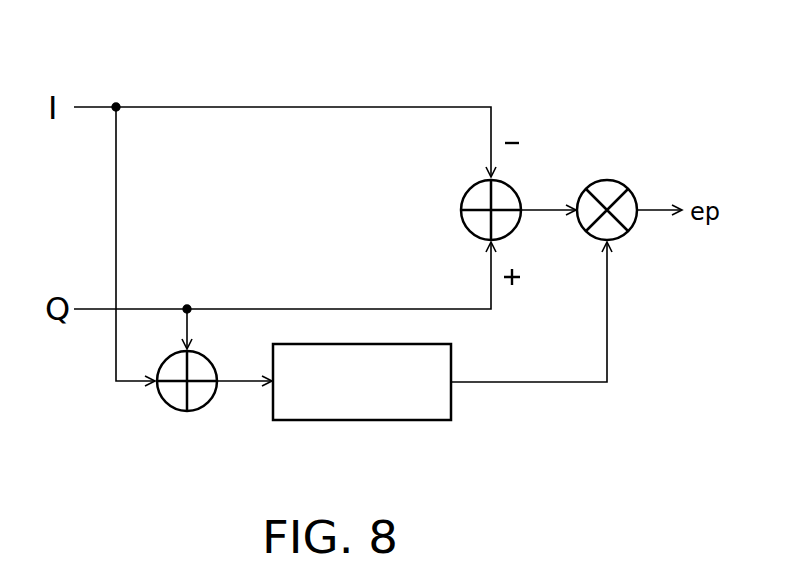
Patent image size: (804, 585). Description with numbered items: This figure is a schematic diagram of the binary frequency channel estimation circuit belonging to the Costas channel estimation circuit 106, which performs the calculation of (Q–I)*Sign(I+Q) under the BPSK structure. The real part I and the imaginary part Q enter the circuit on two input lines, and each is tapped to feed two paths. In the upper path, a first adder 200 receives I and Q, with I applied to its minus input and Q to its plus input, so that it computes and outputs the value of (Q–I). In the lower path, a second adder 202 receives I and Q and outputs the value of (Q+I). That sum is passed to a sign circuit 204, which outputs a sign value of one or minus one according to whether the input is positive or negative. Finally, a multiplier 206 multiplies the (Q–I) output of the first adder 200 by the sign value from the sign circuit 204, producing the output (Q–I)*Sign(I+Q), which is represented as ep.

The Costas channel estimation circuit 106 is at (550, 60).
The first adder 200 is at (468, 187).
The second adder 202 is at (165, 407).
The sign circuit 204 is at (393, 420).
The multiplier 206 is at (620, 181).